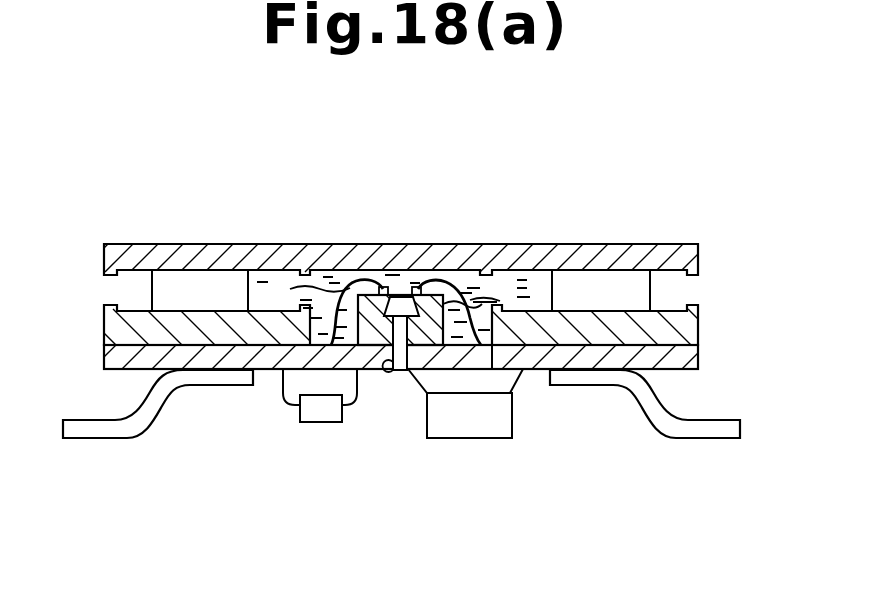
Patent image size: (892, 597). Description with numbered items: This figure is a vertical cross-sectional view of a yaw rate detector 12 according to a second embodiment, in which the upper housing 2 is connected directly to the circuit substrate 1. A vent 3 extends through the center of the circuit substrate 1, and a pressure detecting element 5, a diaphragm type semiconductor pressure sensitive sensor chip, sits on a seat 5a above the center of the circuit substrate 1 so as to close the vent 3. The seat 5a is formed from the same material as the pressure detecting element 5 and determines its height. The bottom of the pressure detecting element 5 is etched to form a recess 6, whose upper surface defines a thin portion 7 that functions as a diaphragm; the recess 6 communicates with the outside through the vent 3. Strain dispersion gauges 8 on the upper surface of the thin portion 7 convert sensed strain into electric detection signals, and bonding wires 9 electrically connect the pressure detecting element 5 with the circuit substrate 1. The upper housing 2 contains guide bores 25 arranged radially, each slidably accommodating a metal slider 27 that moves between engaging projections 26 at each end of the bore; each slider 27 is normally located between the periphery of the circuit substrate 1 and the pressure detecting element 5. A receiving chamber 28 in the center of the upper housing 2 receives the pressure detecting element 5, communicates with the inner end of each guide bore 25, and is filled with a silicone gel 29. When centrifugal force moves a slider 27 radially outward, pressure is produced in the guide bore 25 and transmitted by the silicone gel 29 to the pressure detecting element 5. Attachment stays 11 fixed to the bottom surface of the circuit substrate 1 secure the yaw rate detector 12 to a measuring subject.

The circuit substrate 1 is at (698, 362).
The upper housing 2 is at (698, 250).
The vent 3 is at (400, 370).
The pressure detecting element 5 is at (490, 283).
The seat 5a is at (556, 343).
The recess 6 is at (323, 318).
The thin portion 7 is at (428, 295).
The strain dispersion gauges 8 is at (384, 287).
The bonding wires 9 is at (482, 268).
The attachment stays 11 is at (202, 384).
The yaw rate detector 12 is at (576, 169).
The guide bores 25 is at (182, 268).
The engaging projections 26 is at (320, 269).
The metal slider 27 is at (235, 280).
The receiving chamber 28 is at (356, 282).
The silicone gel 29 is at (447, 282).